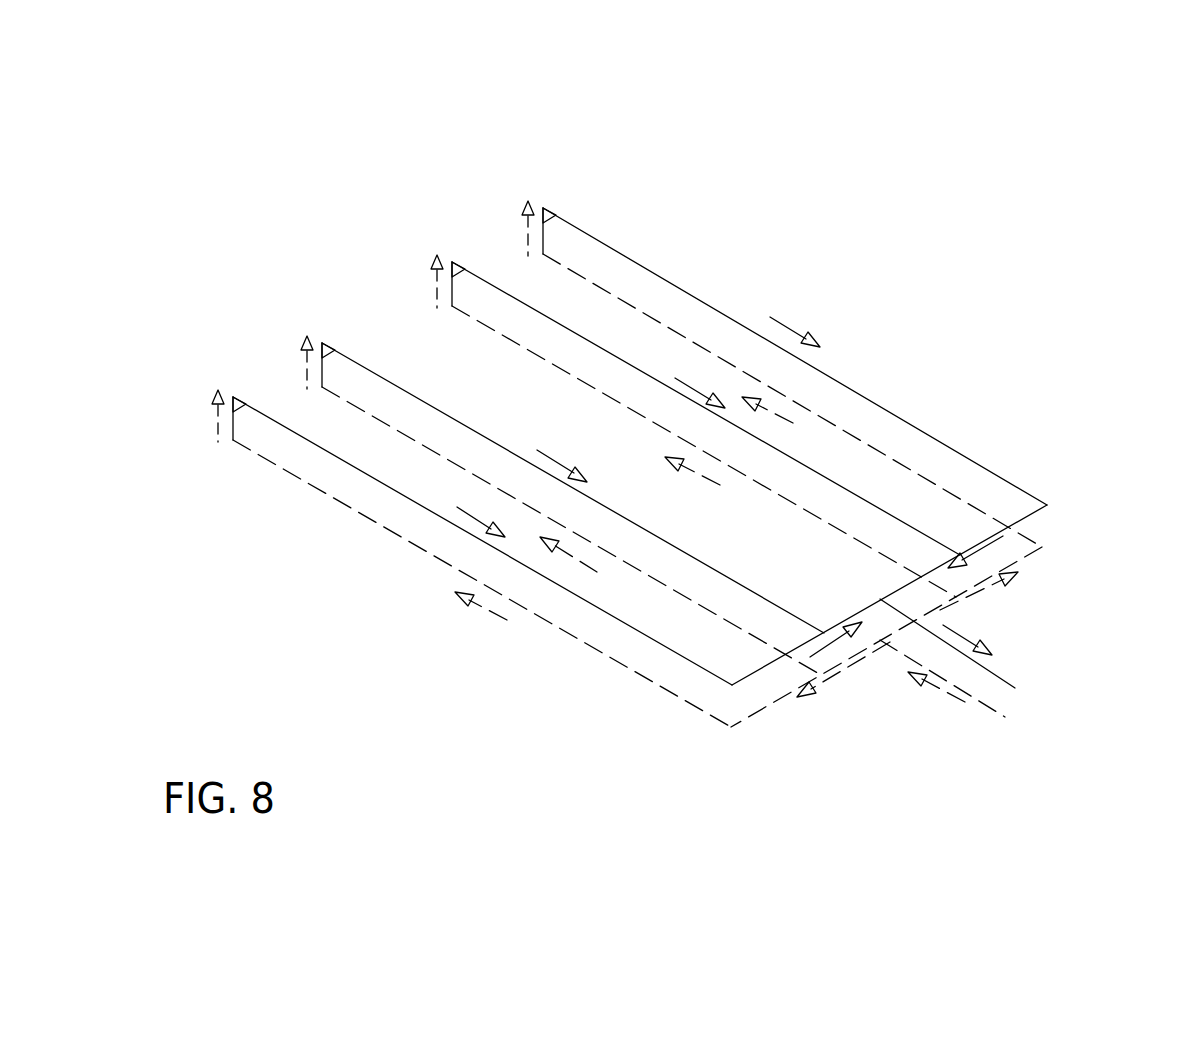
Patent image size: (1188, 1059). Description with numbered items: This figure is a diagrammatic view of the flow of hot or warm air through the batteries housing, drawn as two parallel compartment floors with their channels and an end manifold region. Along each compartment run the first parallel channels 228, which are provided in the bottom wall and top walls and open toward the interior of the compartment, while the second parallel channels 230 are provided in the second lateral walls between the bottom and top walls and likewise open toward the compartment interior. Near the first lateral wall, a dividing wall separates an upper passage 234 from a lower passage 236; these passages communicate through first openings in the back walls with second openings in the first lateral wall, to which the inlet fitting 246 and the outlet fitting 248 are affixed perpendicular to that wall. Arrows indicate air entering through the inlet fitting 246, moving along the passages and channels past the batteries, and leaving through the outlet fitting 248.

The first parallel channels 228 is at (567, 327).
The second parallel channels 230 is at (243, 402).
The upper passage 234 is at (1020, 520).
The lower passage 236 is at (760, 713).
The inlet fitting 246 is at (983, 703).
The outlet fitting 248 is at (998, 673).